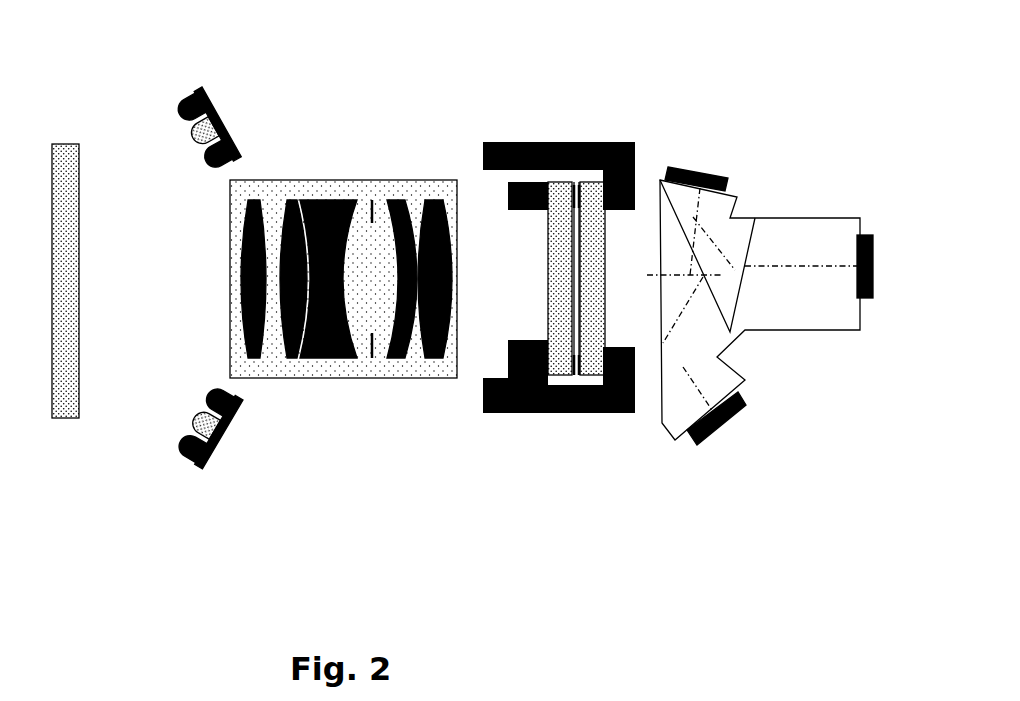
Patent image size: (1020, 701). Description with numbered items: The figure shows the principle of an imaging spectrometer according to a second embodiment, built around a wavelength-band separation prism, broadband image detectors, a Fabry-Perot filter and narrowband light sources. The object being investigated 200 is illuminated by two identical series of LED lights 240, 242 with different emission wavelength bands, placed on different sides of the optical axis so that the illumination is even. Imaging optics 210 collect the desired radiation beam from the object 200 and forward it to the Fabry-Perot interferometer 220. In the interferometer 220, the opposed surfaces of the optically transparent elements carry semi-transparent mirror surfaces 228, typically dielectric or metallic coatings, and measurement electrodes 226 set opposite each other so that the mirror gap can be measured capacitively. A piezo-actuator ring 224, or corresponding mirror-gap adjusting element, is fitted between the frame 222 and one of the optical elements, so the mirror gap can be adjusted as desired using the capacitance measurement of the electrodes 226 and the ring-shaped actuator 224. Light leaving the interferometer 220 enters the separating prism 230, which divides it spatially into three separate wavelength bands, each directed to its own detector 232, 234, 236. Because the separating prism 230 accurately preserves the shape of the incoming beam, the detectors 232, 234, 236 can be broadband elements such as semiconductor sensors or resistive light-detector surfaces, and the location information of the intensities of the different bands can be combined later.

The object 200 is at (58, 132).
The imaging optics 210 is at (374, 162).
The interferometer 220 is at (553, 119).
The frame 222 is at (483, 402).
The piezo-actuator ring 224 is at (578, 362).
The measurement electrodes 226 is at (566, 378).
The semi-transparent mirror surfaces 228 is at (573, 265).
The separating prism 230 is at (802, 202).
The detector 232 is at (683, 170).
The detector 234 is at (866, 245).
The detector 236 is at (728, 418).
The light source 240 is at (240, 445).
The light source 242 is at (247, 110).